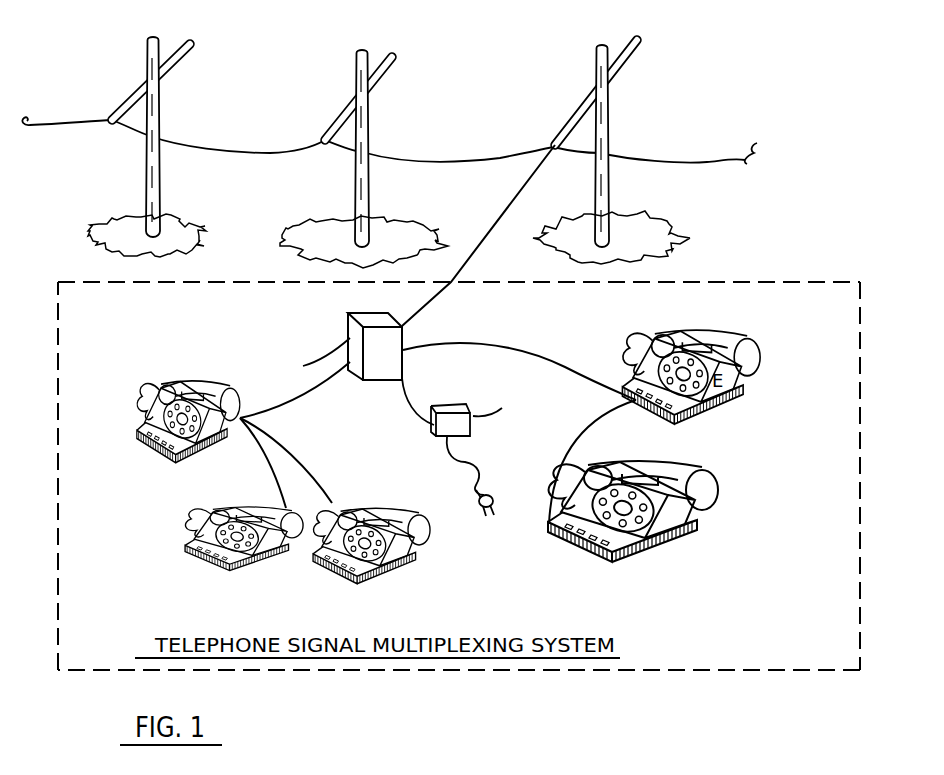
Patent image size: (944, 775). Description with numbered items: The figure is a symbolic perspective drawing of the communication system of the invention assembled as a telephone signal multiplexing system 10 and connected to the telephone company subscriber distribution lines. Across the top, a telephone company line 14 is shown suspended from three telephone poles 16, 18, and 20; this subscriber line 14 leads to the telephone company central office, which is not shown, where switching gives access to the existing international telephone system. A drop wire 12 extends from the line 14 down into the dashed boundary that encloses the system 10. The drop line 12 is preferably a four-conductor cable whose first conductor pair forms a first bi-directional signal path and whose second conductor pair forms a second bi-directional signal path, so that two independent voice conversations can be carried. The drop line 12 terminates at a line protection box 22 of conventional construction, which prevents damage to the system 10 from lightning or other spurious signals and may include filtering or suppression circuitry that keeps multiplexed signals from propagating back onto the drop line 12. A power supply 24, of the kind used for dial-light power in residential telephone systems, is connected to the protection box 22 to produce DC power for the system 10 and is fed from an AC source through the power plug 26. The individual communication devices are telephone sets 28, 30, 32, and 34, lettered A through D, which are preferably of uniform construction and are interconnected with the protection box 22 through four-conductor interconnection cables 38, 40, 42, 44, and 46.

The telephone signal multiplexing system 10 is at (822, 527).
The drop wire 12 is at (501, 226).
The telephone company line 14 is at (660, 163).
The telephone pole 16 is at (176, 60).
The telephone pole 18 is at (390, 66).
The telephone pole 20 is at (632, 51).
The line protection box 22 is at (298, 342).
The power supply 24 is at (468, 426).
The power plug 26 is at (493, 494).
The telephone set 28 is at (168, 456).
The telephone set 30 is at (256, 562).
The telephone set 32 is at (398, 555).
The telephone set 34 is at (662, 545).
The four conductor interconnection cable 38 is at (293, 404).
The four conductor interconnection cable 40 is at (266, 470).
The four conductor interconnection cable 42 is at (325, 493).
The four conductor interconnection cable 44 is at (500, 346).
The four conductor interconnection cable 46 is at (582, 432).